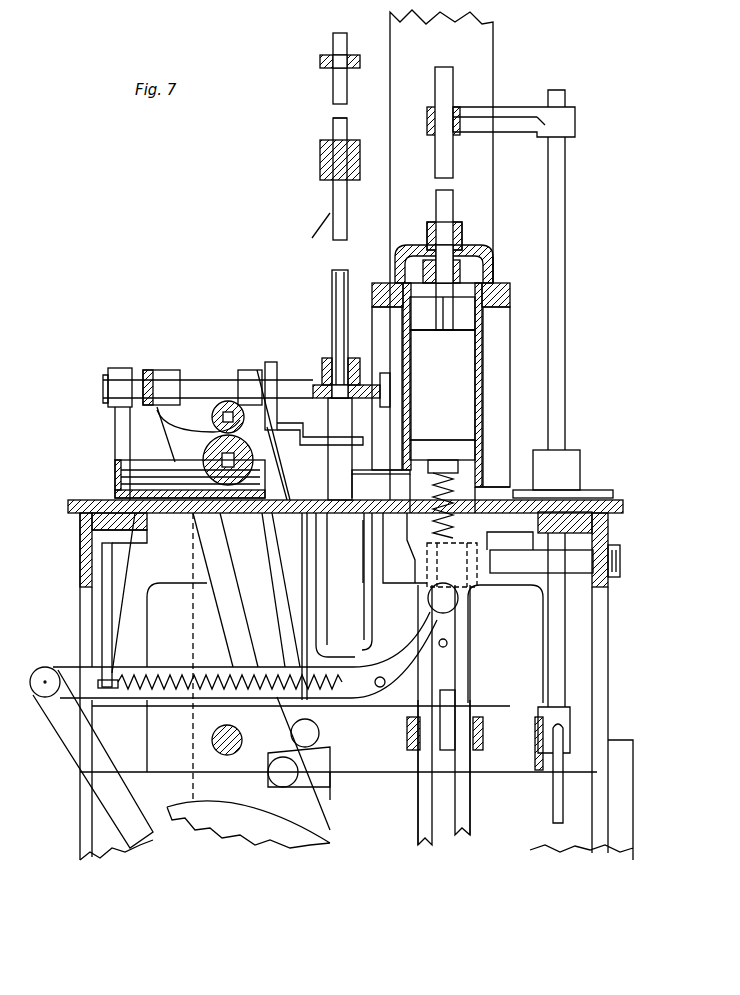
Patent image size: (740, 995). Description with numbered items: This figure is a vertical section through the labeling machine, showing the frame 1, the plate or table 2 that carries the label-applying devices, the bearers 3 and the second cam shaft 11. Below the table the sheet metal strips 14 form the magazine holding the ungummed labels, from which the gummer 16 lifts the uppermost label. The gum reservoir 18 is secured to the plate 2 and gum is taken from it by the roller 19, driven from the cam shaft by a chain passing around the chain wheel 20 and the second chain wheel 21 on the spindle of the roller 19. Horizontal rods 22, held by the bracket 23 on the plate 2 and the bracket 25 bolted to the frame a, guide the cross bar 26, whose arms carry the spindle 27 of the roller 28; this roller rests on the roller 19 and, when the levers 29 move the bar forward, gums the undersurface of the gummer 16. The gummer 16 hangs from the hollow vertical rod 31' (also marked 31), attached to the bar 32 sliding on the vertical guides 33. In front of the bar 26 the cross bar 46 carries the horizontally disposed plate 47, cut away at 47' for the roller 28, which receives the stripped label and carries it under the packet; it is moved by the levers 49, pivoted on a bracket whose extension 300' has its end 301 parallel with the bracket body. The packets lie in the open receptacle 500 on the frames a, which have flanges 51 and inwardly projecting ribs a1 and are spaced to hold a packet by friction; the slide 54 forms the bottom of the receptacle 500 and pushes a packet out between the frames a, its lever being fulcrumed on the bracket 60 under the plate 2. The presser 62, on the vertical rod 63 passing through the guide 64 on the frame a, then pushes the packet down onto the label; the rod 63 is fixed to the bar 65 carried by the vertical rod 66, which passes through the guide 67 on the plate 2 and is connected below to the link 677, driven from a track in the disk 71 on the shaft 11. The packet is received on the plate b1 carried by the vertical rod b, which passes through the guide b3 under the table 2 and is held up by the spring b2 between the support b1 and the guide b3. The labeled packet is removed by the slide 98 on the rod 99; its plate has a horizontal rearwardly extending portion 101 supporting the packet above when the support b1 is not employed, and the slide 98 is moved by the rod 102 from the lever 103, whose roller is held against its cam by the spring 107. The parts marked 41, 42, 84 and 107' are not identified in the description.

The frame 1 is at (160, 582).
The plate 2 is at (97, 503).
The bearers 3 is at (334, 768).
The second cam shaft 11 is at (378, 398).
The sheet metal strips 14 is at (355, 630).
The gummer 16 is at (282, 368).
The gum reservoir 18 is at (147, 462).
The roller 19 is at (228, 460).
The chain wheel 20 is at (192, 602).
The second chain wheel 21 is at (278, 460).
The horizontal rods 22 is at (208, 389).
The bracket 23 is at (122, 378).
The bracket 25 is at (455, 363).
The cross bar 26 is at (160, 372).
The spindle 27 is at (212, 418).
The roller 28 is at (226, 400).
The levers 29 is at (206, 634).
The cam roller 31 is at (219, 734).
The hollow vertical rod 31' is at (319, 326).
The bar 32 is at (320, 160).
The vertical guides 33 is at (339, 449).
The rod end 41 is at (333, 118).
The rod 42 is at (322, 65).
The cross bar 46 is at (250, 387).
The horizontally disposed plate 47 is at (345, 405).
The cut away 47' is at (314, 362).
The levers 49 is at (285, 487).
The flanges 51 is at (416, 803).
The slide 54 is at (440, 330).
The bracket 60 is at (465, 694).
The presser 62 is at (410, 278).
The vertical rod 63 is at (453, 196).
The guide 64 is at (490, 272).
The bar 65 is at (523, 138).
The vertical rod 66 is at (567, 300).
The guide 67 is at (563, 474).
The disk 71 is at (622, 772).
The rod 84 is at (470, 807).
The slide 98 is at (448, 578).
The rod 99 is at (555, 561).
The horizontal rearwardly extending portion 101 is at (392, 480).
The rod 102 is at (250, 655).
The lever 103 is at (80, 765).
The spring 107 is at (414, 720).
The post 107' is at (115, 686).
The extension 300' is at (248, 839).
The end of extension 301 is at (325, 785).
The open receptacle 500 is at (472, 232).
The link 677 is at (550, 835).
The frames a is at (515, 360).
The inwardly projecting ribs a1 is at (442, 313).
The vertical rod b is at (445, 640).
The plate b1 is at (442, 458).
The spring b2 is at (497, 468).
The guide b3 is at (517, 547).